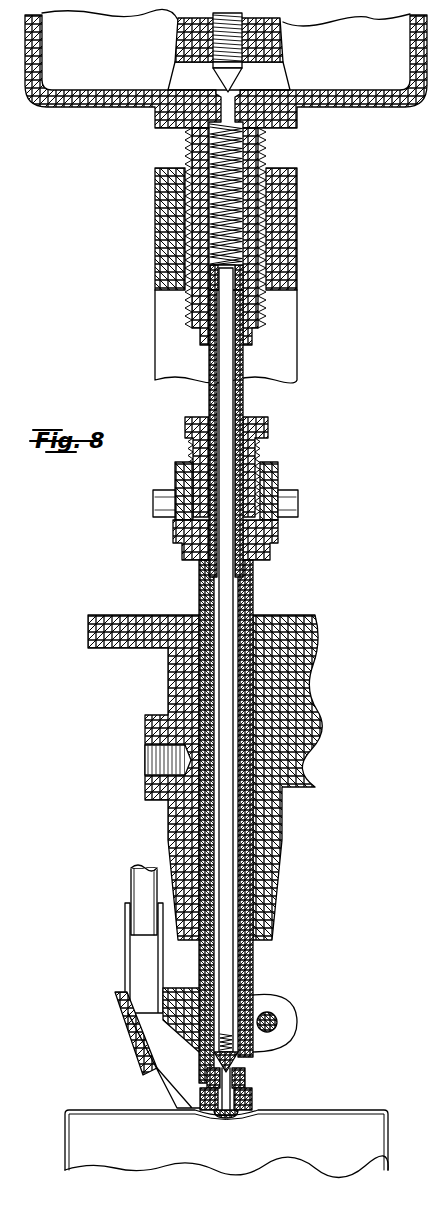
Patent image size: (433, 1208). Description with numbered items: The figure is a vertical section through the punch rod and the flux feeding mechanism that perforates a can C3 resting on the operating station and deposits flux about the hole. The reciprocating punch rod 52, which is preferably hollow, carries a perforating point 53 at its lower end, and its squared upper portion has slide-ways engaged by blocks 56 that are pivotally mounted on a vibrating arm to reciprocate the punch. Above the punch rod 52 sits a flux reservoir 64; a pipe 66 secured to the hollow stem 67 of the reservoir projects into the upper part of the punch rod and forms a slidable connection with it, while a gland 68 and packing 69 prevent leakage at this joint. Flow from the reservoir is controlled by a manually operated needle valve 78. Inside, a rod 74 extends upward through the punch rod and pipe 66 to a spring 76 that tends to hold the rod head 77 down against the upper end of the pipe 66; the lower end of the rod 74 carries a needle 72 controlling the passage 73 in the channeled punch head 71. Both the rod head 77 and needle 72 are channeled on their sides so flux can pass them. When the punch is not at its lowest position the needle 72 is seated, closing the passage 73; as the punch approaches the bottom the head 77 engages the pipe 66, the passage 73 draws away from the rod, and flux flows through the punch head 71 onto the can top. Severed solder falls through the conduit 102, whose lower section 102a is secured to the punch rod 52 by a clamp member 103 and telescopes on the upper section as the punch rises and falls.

The flux reservoir 64 is at (226, 68).
The needle valve 78 is at (233, 79).
The hollow stem 67 is at (260, 152).
The spring 76 is at (236, 196).
The rod head 77 is at (240, 281).
The pipe 66 is at (243, 399).
The gland 68 is at (256, 445).
The blocks 56 is at (272, 488).
The packing 69 is at (250, 535).
The punch rod 52 is at (251, 588).
The rod 74 is at (226, 966).
The conduit 102 is at (150, 887).
The lower conduit section 102a is at (140, 965).
The clamp member 103 is at (125, 1031).
The needle 72 is at (236, 1062).
The passage 73 is at (242, 1078).
The punch head 71 is at (250, 1097).
The perforating point 53 is at (229, 1120).
The can C3 is at (355, 1110).